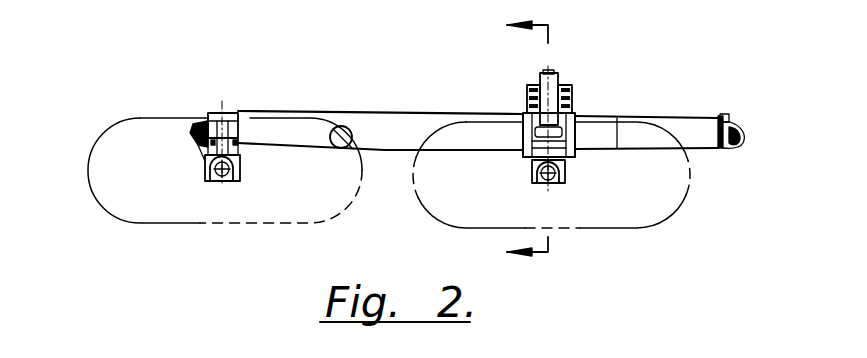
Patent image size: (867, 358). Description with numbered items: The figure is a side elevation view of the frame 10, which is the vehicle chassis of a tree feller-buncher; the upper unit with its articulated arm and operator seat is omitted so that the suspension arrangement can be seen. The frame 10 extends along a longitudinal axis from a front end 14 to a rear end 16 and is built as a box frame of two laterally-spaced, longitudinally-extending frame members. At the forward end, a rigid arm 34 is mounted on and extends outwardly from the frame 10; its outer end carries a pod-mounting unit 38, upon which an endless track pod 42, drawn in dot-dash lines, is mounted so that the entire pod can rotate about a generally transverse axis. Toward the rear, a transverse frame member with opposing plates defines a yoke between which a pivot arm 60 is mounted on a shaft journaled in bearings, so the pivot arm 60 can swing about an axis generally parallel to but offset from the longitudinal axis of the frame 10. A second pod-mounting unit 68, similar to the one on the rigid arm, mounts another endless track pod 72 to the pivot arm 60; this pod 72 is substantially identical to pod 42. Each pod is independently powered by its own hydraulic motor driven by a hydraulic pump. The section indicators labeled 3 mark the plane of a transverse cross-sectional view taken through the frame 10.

The frame 10 is at (710, 84).
The front end 14 is at (208, 115).
The rear end 16 is at (732, 118).
The second rigid arm 34 is at (239, 156).
The pod-mounting unit 38 is at (227, 181).
The endless track pod 42 is at (88, 160).
The pivot arm 60 is at (566, 154).
The pod-mounting unit 68 is at (553, 183).
The endless track pod 72 is at (689, 176).
The section line 3- 3 is at (515, 139).